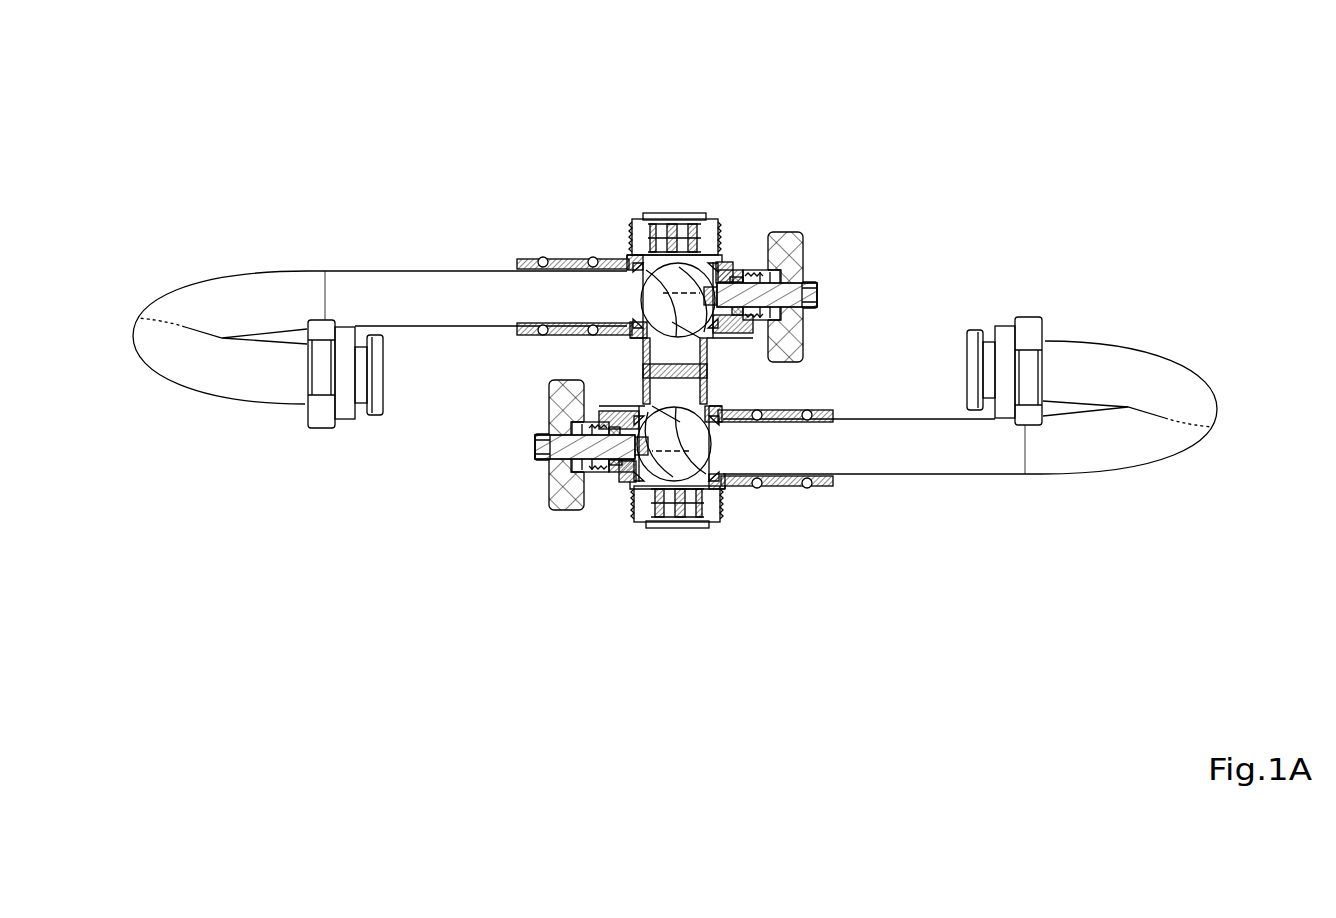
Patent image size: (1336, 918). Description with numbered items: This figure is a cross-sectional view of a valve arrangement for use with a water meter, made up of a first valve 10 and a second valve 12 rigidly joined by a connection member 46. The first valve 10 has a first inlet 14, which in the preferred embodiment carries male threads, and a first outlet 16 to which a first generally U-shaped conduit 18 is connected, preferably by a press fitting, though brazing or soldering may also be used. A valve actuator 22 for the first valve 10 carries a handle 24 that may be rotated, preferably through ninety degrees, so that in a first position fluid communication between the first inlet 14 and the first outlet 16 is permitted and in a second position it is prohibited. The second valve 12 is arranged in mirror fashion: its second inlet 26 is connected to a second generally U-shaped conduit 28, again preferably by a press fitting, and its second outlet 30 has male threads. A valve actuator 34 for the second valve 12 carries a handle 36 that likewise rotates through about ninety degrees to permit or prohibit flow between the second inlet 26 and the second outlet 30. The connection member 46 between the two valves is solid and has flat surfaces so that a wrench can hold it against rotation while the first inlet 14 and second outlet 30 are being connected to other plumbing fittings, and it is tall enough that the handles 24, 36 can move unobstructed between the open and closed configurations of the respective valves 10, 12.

The first valve 10 is at (757, 505).
The second valve 12 is at (710, 254).
The first inlet 14 is at (705, 498).
The first outlet 16 is at (743, 407).
The first generally U-shaped conduit 18 is at (1117, 442).
The valve actuator 22 is at (585, 447).
The handle 24 is at (557, 421).
The second inlet 26 is at (610, 255).
The second generally U-shaped conduit 28 is at (262, 303).
The second outlet 30 is at (718, 253).
The valve actuator 34 is at (778, 368).
The handle 36 is at (802, 250).
The connection member 46 is at (642, 368).